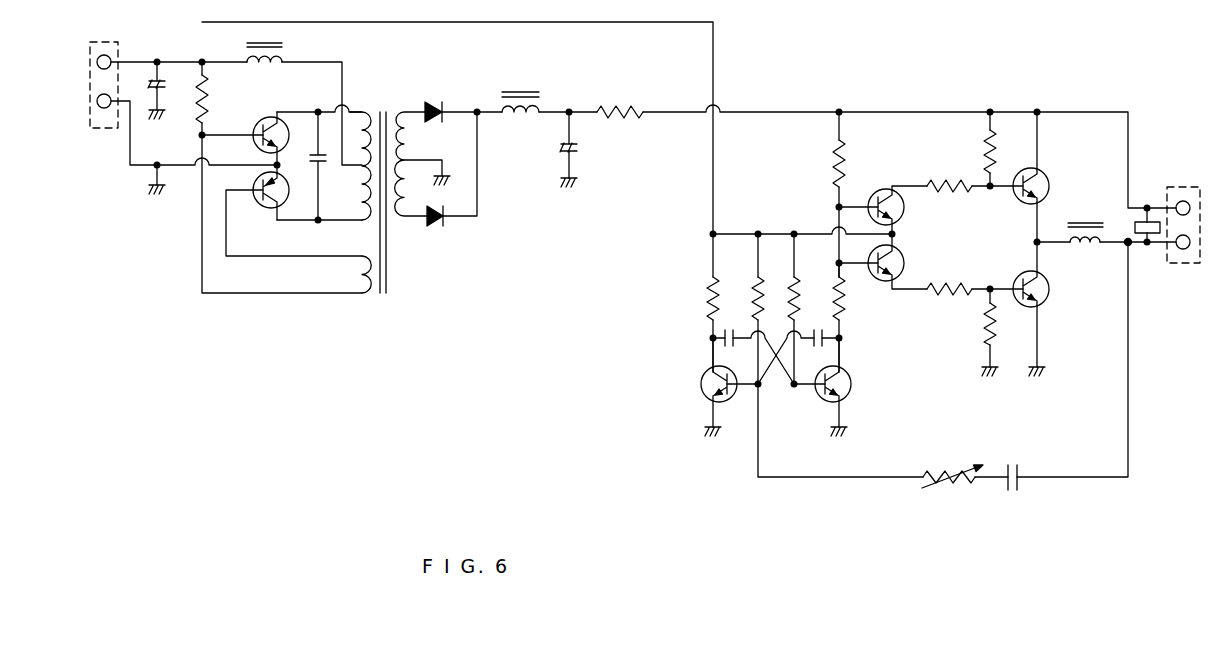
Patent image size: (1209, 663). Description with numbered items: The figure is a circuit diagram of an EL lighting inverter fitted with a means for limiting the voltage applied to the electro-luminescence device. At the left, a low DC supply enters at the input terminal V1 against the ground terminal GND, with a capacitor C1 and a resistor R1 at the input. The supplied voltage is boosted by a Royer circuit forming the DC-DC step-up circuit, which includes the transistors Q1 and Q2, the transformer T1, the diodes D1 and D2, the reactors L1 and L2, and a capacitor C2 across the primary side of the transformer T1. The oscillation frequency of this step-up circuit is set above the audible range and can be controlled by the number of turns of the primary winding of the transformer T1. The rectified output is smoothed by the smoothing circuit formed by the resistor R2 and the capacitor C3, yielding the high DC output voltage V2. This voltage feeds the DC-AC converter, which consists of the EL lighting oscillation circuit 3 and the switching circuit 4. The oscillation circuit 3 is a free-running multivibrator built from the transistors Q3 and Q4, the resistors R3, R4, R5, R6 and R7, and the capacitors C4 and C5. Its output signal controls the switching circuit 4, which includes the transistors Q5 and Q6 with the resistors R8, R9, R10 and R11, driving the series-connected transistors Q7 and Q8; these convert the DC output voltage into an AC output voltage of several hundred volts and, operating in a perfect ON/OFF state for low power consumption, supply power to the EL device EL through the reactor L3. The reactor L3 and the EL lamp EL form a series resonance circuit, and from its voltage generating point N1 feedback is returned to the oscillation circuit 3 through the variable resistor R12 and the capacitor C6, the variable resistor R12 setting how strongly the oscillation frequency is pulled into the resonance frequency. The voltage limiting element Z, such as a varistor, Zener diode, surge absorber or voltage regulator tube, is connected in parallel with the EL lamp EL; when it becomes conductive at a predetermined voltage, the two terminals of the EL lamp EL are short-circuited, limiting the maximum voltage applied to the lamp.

The supply voltage input terminal V1 is at (87, 85).
The ground terminal GND is at (75, 96).
The capacitor C1 is at (178, 92).
The resistor R1 is at (215, 94).
The transistor Q1 is at (267, 113).
The reactor L1 is at (286, 48).
The capacitor C2 is at (330, 162).
The transistor Q2 is at (262, 210).
The transformer T1 is at (384, 107).
The diode D1 is at (438, 97).
The diode D2 is at (432, 228).
The reactor L2 is at (522, 90).
The resistor R2 is at (623, 102).
The capacitor C3 is at (586, 149).
The intermediate supply voltage V2 is at (750, 94).
The EL lighting oscillation circuit 3 is at (758, 173).
The switching circuit 4 is at (903, 158).
The resistor R7 is at (834, 159).
The transistor Q5 is at (891, 198).
The transistor Q6 is at (880, 282).
The resistor R3 is at (707, 284).
The resistor R4 is at (748, 286).
The resistor R5 is at (790, 276).
The resistor R6 is at (831, 286).
The capacitor C4 is at (737, 333).
The capacitor C5 is at (811, 333).
The transistor Q3 is at (703, 392).
The transistor Q4 is at (850, 392).
The resistor R8 is at (980, 162).
The resistor R9 is at (960, 190).
The resistor R10 is at (952, 283).
The transistor Q7 is at (1044, 180).
The transistor Q8 is at (1044, 300).
The resistor R11 is at (983, 323).
The reactor L3 is at (1089, 221).
The voltage limiting element Z is at (1137, 226).
The voltage generating point N1 is at (1124, 248).
The EL device EL is at (1183, 210).
The variable resistor R12 is at (955, 465).
The capacitor C6 is at (1015, 464).